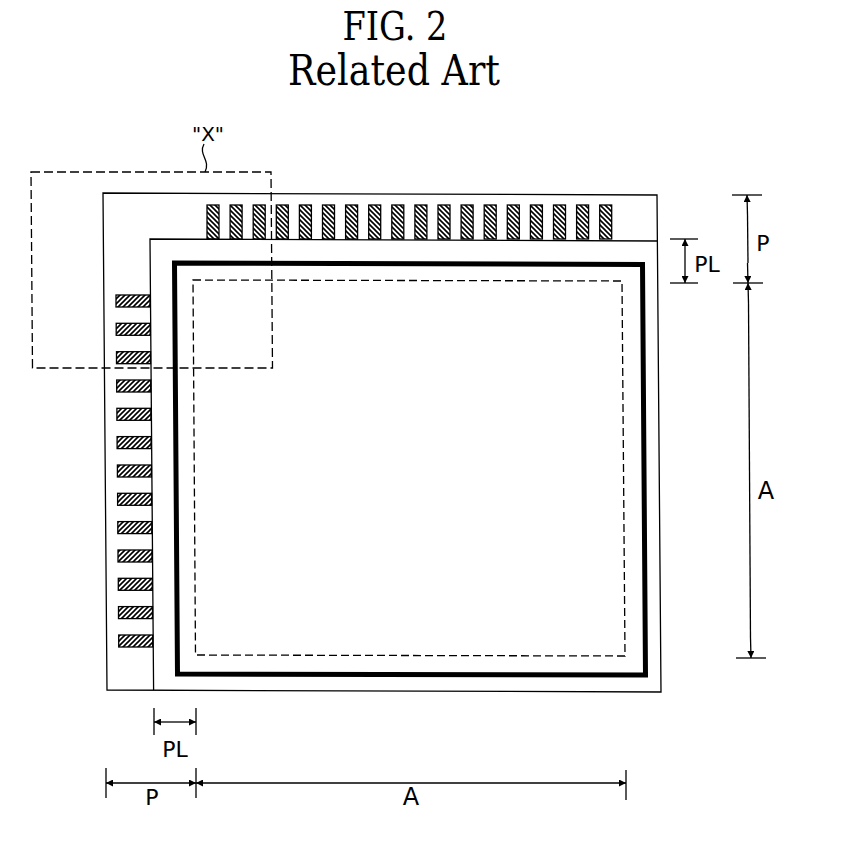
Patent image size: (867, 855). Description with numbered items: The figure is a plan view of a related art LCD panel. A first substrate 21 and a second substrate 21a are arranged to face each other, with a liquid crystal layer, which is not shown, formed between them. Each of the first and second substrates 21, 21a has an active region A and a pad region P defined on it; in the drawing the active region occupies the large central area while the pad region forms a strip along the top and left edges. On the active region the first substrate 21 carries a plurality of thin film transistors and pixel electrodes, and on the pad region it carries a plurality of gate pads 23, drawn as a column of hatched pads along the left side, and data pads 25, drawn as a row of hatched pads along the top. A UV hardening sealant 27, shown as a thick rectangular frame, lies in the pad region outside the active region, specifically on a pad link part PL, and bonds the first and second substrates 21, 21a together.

The first substrate 21 is at (648, 219).
The second substrate 21a is at (150, 267).
The gate pads 23 is at (118, 584).
The data pads 25 is at (514, 205).
The UV hardening sealant 27 is at (646, 400).